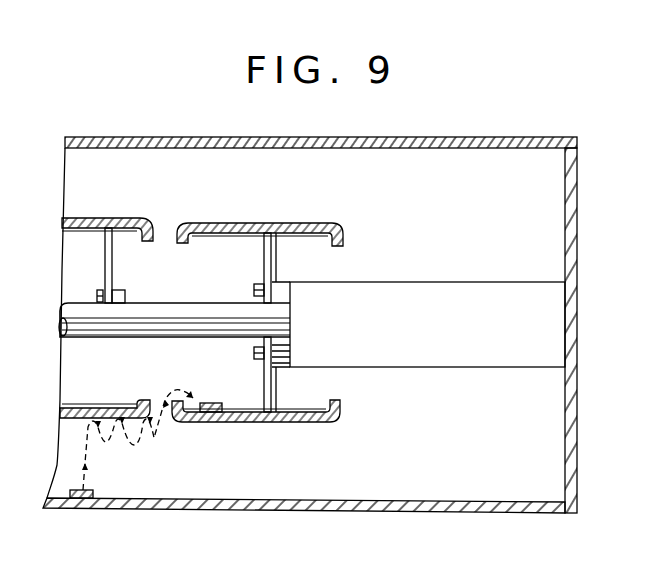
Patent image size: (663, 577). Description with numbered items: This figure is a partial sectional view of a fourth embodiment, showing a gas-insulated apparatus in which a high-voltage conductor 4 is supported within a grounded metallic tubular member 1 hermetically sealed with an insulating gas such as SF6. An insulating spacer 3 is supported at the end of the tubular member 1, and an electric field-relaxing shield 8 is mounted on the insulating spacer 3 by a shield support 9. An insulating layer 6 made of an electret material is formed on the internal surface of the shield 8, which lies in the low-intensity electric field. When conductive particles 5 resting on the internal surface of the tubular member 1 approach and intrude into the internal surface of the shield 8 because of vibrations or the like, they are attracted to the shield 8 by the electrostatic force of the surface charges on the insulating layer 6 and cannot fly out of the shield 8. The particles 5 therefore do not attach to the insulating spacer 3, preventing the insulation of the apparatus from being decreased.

The metallic tubular member 1 is at (465, 153).
The insulating spacer 3 is at (473, 283).
The high-voltage conductor 4 is at (185, 303).
The conductive particles 5 is at (222, 404).
The insulating layer 6 is at (93, 231).
The electric field-relaxing shield 8 is at (94, 218).
The shield support 9 is at (113, 270).